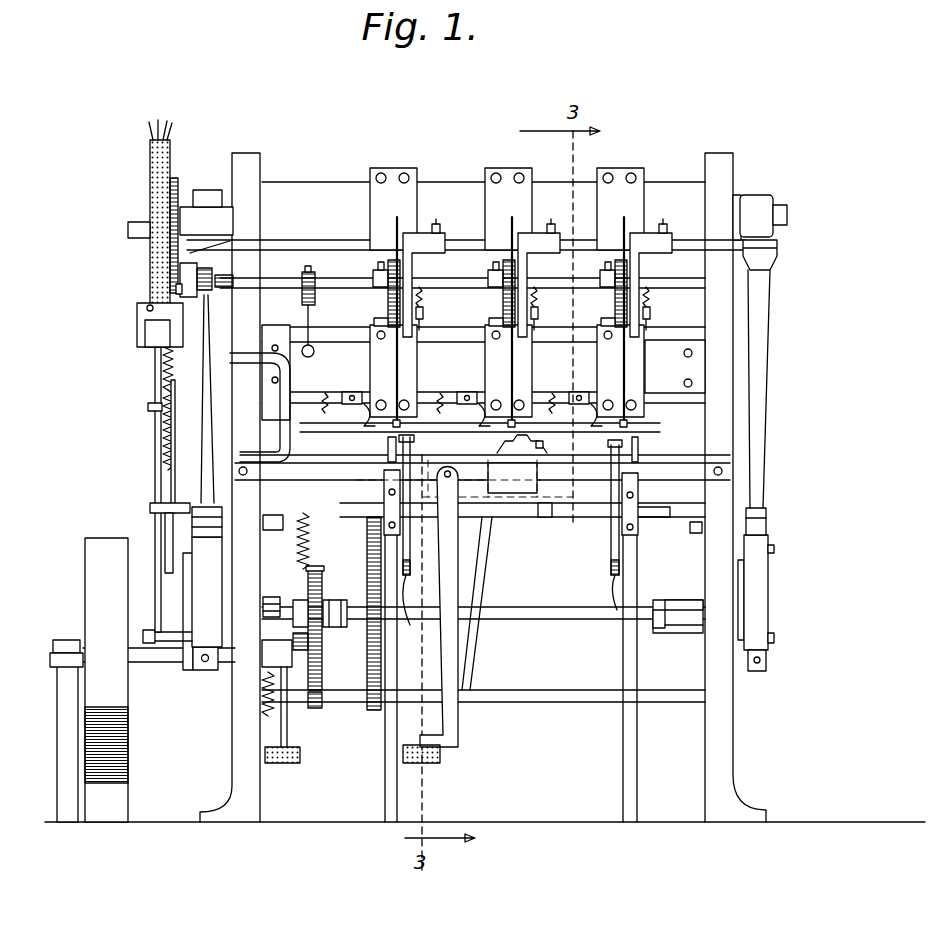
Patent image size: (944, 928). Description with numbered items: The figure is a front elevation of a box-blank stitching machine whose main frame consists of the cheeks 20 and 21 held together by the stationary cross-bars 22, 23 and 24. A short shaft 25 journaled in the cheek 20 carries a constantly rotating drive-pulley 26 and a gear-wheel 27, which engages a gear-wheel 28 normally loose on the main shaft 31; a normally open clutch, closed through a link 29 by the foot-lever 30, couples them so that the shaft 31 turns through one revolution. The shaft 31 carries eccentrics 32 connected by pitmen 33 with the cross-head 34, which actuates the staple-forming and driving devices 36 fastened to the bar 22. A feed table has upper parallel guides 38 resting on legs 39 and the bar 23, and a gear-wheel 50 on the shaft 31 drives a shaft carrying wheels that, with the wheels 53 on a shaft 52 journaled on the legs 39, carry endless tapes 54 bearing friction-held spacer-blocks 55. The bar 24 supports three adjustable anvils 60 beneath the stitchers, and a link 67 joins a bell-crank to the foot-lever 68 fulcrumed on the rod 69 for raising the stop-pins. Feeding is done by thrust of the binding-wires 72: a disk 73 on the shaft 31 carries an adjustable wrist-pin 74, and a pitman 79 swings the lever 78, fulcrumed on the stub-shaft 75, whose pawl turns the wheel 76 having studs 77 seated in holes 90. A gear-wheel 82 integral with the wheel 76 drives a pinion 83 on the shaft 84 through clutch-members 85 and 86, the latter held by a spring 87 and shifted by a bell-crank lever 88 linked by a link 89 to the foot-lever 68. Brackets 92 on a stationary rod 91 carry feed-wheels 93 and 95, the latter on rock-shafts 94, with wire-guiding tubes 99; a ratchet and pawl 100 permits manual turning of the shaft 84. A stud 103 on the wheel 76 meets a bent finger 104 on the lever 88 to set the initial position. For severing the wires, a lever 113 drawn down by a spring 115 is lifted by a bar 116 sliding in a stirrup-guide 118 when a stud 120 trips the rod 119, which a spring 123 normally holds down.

The cheek 20 is at (232, 727).
The cheek 21 is at (733, 728).
The cross-bar 22 is at (447, 340).
The cross-bar 23 is at (325, 462).
The cross-bar 24 is at (340, 505).
The short shaft 25 is at (325, 660).
The drive-pulley 26 is at (89, 680).
The gear-wheel 27 is at (322, 683).
The gear-wheel 28 is at (314, 568).
The link 29 is at (285, 692).
The foot-lever 30 is at (300, 756).
The main shaft 31 is at (532, 608).
The eccentric 32 is at (214, 581).
The pitman 33 is at (203, 430).
The cross-head 34 is at (322, 186).
The staple-forming and driving devices 36 is at (487, 361).
The guide 38 is at (388, 450).
The leg 39 is at (385, 790).
The gear-wheel 50 is at (368, 598).
The shaft 52 is at (545, 519).
The wheel 53 is at (410, 565).
The endless metal ribbon 54 is at (410, 640).
The spacer-block 55 is at (412, 442).
The anvil 60 is at (500, 455).
The link 67 is at (492, 570).
The foot-lever 68 is at (458, 742).
The rod 69 is at (538, 690).
The binding-wire 72 is at (398, 220).
The disk 73 is at (200, 672).
The wrist-pin 74 is at (143, 634).
The stub-shaft 75 is at (192, 222).
The wheel 76 is at (150, 198).
The teeth 77 is at (163, 118).
The lever 78 is at (137, 305).
The pitman 79 is at (155, 480).
The gear-wheel 82 is at (178, 178).
The pinion 83 is at (176, 289).
The shaft 84 is at (347, 290).
The clutch-member 85 is at (213, 265).
The companion clutch-member 86 is at (180, 273).
The spring 87 is at (233, 280).
The bell-crank lever 88 is at (240, 362).
The link 89 is at (480, 550).
The tooth-seats 90 is at (150, 246).
The stationary rod 91 is at (690, 248).
The bracket 92 is at (412, 278).
The binding-wire feed-wheel 93 is at (388, 292).
The rock-shaft 94 is at (532, 312).
The binding-wire feed-wheel 95 is at (374, 323).
The wire-guiding tube 99 is at (372, 367).
The ratchet and swinging pawl 100 is at (302, 302).
The stud 103 is at (147, 311).
The bent finger 104 is at (150, 342).
The lever 113 is at (173, 513).
The spring 115 is at (300, 540).
The bar 116 is at (165, 461).
The stirrup-guide 118 is at (150, 510).
The rod 119 is at (171, 400).
The stud 120 is at (160, 337).
The spring 123 is at (148, 407).